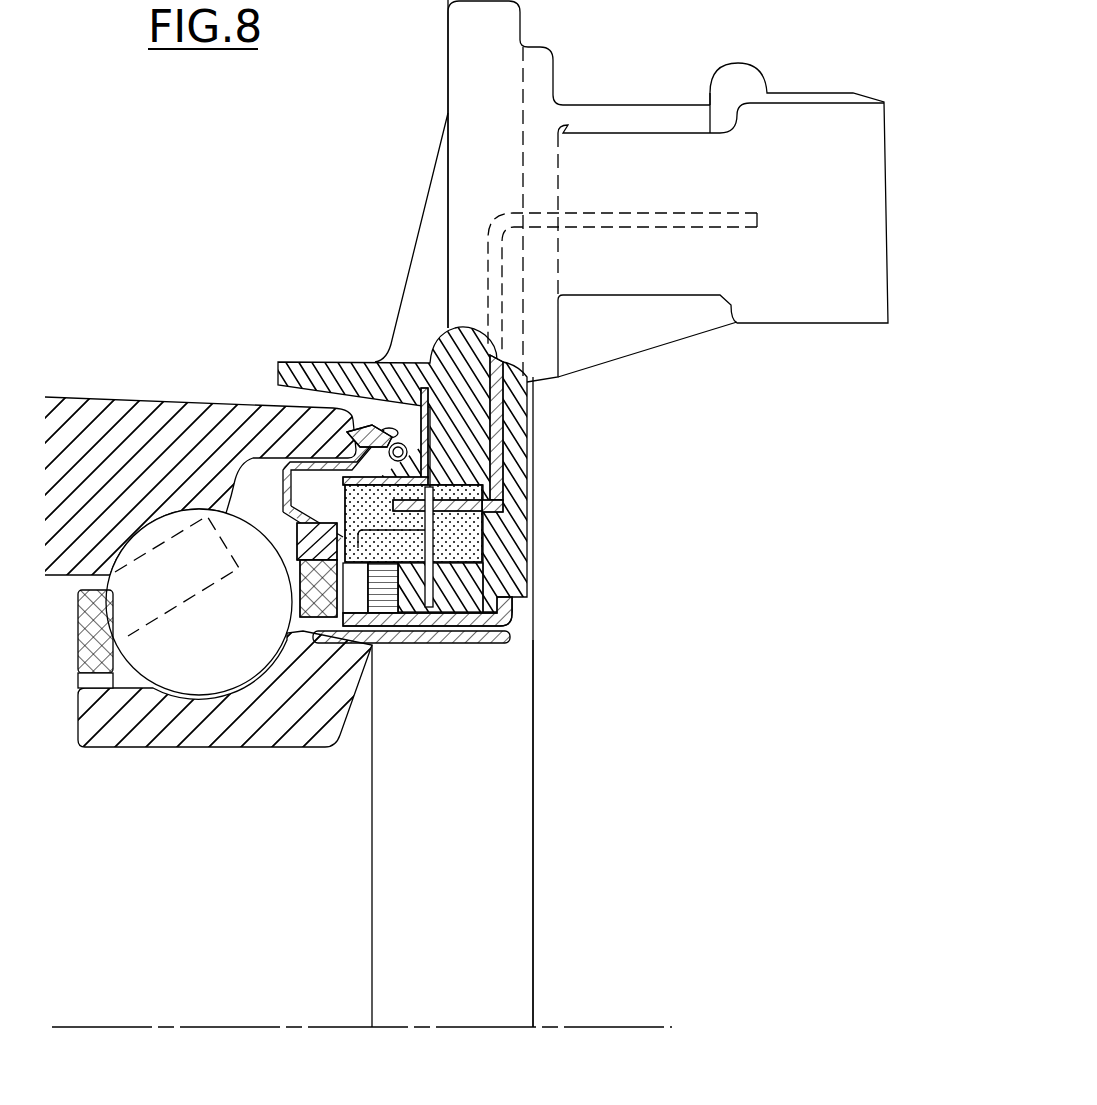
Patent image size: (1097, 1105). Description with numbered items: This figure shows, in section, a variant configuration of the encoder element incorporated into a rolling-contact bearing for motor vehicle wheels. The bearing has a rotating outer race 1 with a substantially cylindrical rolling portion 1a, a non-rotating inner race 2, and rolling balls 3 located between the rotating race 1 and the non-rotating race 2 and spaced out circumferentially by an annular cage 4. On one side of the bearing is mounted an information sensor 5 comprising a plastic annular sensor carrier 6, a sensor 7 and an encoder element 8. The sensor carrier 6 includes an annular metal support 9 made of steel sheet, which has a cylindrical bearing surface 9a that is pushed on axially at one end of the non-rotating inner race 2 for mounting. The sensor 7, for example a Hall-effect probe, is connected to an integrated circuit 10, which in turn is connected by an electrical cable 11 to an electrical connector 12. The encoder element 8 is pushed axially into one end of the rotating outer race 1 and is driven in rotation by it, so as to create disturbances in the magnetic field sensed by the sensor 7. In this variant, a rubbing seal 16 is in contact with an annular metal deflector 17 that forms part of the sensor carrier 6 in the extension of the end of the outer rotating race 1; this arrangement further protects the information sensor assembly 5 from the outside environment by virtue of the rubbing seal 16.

The rotating outer race 1 is at (284, 443).
The cylindrical rolling portion 1a is at (142, 425).
The non-rotating inner half-race 2 is at (148, 717).
The rolling ball 3 is at (220, 657).
The annular cage 4 is at (93, 657).
The information sensor 5 is at (545, 692).
The sensor carrier 6 is at (477, 790).
The sensor 7 is at (355, 597).
The encoder element 8 is at (283, 530).
The annular metal support 9 is at (402, 704).
The cylindrical bearing surface 9a is at (332, 637).
The integrated circuit 10 is at (433, 547).
The electrical cable 11 is at (505, 413).
The electrical connector 12 is at (641, 215).
The rubbing seal 16 is at (412, 440).
The annular metal deflector 17 is at (356, 428).